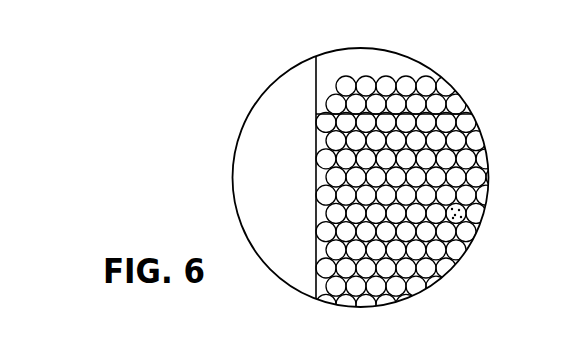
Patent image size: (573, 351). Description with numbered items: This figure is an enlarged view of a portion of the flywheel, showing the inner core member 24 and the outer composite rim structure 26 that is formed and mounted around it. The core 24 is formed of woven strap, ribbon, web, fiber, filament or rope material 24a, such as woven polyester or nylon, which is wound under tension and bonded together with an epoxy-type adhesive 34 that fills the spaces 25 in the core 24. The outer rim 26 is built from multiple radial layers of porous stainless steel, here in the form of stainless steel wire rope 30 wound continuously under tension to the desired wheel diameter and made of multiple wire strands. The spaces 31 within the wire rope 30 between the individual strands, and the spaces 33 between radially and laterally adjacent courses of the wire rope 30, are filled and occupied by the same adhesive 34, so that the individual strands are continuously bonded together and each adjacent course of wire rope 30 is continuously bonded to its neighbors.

The core member 24 is at (417, 80).
The rope material 24a is at (438, 105).
The spaces 25 is at (357, 78).
The outer composite rim structure 26 is at (466, 160).
The stainless steel wire rope 30 is at (467, 197).
The spaces 31 is at (460, 213).
The spaces 33 is at (320, 248).
The adhesive 34 is at (335, 92).